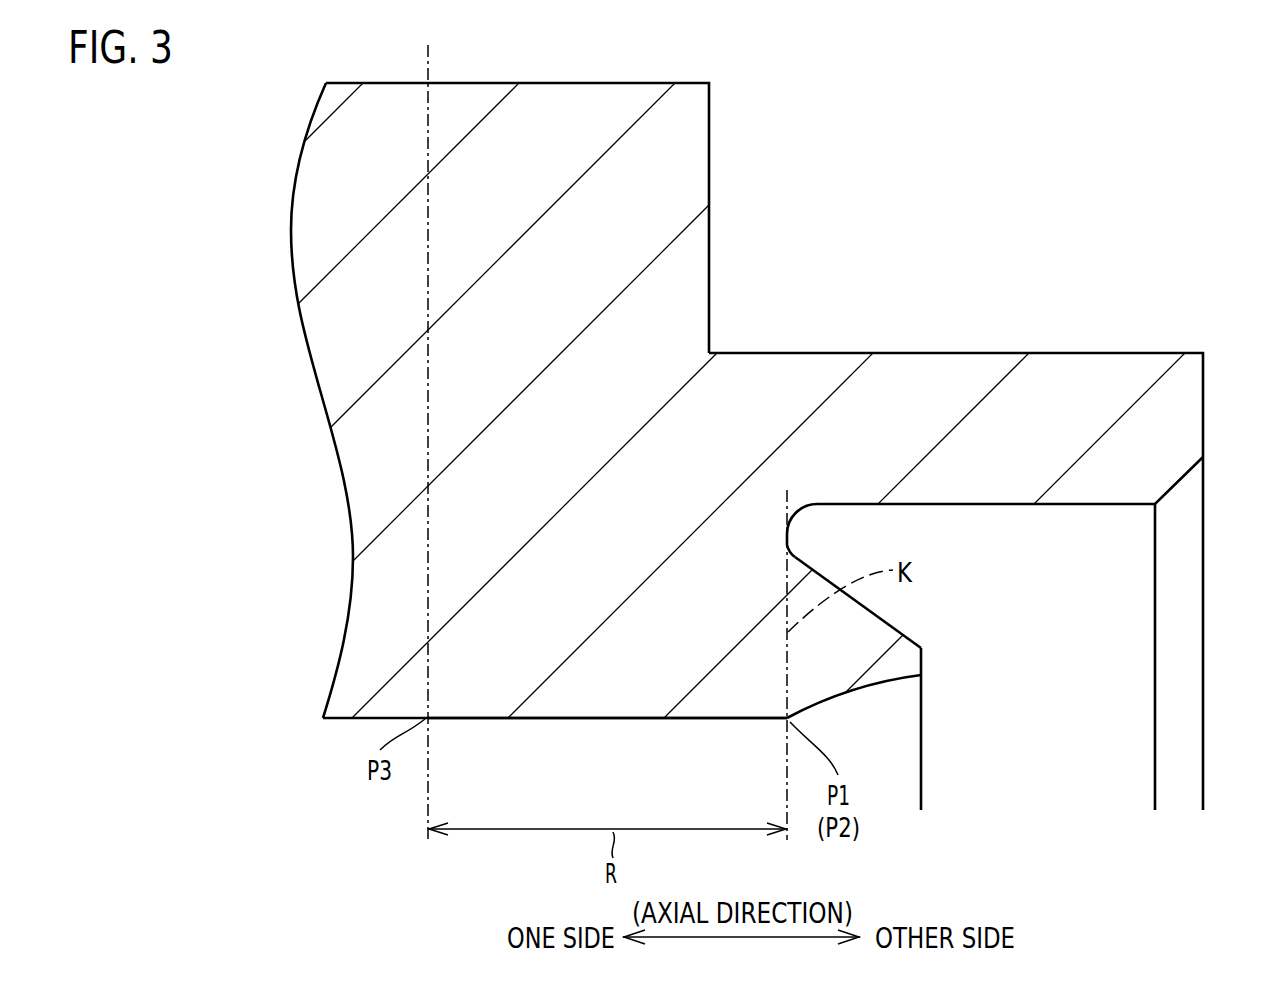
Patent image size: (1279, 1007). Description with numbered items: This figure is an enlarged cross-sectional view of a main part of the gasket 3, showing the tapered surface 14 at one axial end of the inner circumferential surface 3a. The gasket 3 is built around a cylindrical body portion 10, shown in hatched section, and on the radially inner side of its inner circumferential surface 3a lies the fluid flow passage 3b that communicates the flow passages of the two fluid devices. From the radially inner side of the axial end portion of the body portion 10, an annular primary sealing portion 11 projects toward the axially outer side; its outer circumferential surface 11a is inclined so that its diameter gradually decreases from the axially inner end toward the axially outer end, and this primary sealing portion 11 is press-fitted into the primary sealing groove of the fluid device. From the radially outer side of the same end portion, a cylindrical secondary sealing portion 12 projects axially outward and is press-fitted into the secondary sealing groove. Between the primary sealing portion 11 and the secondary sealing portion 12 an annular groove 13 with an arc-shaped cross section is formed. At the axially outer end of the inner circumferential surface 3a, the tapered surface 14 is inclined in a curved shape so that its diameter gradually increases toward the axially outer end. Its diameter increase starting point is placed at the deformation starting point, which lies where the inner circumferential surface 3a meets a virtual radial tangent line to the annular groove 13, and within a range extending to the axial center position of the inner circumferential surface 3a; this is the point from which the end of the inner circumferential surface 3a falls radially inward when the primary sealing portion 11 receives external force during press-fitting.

The gasket 3 is at (968, 250).
The inner circumferential surface 3a is at (543, 721).
The fluid flow passage 3b is at (698, 806).
The body portion 10 is at (632, 612).
The primary sealing portion 11 is at (907, 658).
The outer circumferential surface 11a is at (890, 623).
The secondary sealing portion 12 is at (1160, 407).
The annular groove 13 is at (789, 537).
The tapered surface 14 is at (860, 703).